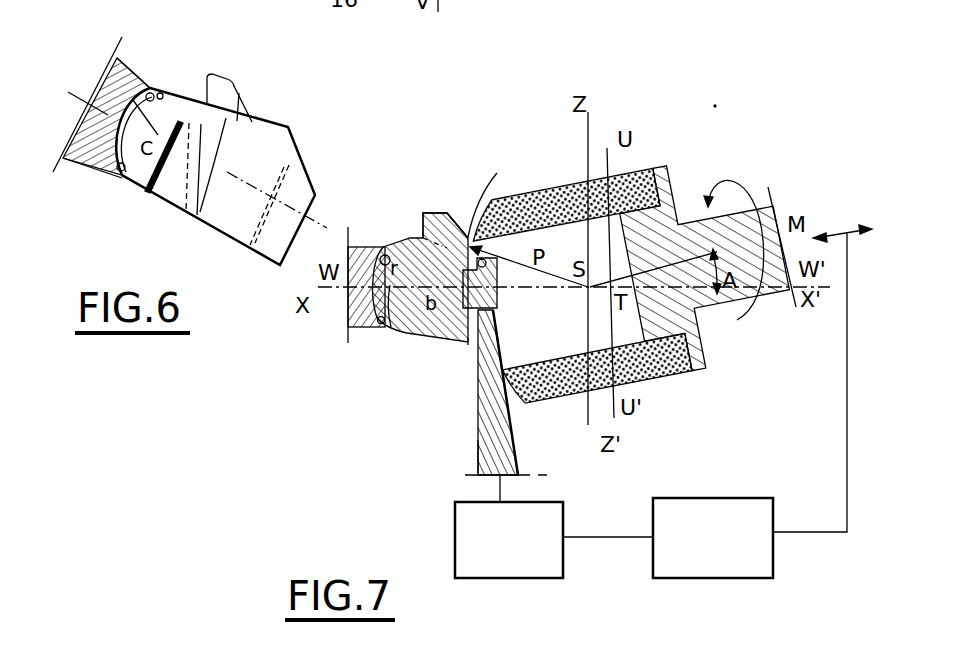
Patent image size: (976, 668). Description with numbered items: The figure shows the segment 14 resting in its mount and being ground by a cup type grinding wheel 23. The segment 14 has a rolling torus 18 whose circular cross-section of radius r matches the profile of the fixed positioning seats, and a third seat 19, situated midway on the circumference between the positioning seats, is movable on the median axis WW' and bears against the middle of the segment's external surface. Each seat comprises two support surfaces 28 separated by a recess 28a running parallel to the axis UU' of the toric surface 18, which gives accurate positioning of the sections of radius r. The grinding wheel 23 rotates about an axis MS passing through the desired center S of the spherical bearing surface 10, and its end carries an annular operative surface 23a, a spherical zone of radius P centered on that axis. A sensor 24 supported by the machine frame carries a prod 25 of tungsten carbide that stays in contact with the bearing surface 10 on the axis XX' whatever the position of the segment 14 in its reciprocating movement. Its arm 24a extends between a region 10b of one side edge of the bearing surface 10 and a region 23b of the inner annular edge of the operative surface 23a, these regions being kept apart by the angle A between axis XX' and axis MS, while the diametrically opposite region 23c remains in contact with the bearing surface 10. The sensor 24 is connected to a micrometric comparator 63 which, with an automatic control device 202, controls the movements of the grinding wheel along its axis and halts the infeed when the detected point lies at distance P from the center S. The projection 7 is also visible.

In FIG. 6, the projection 7 is at (240, 97).
In FIG. 7, the projection 7 is at (427, 213).
In FIG. 6, the spherical bearing surface 10 is at (257, 145).
In FIG. 7, the spherical bearing surface 10 is at (492, 320).
In FIG. 7, the region of side edge of bearing surface 10b is at (468, 340).
In FIG. 6, the segment 14 is at (222, 250).
In FIG. 7, the segment 14 is at (440, 323).
In FIG. 6, the rolling torus 18 is at (118, 93).
In FIG. 7, the rolling torus 18 is at (403, 340).
In FIG. 7, the third seat 19 is at (386, 340).
In FIG. 7, the cup type grinding wheel 23 is at (630, 292).
In FIG. 7, the annular operative surface 23a is at (540, 434).
In FIG. 7, the region of inner annular edge 23b is at (597, 369).
In FIG. 7, the region diametrically opposite region 23b 23c is at (560, 188).
In FIG. 7, the sensor 24 is at (476, 425).
In FIG. 7, the arm 24a is at (488, 445).
In FIG. 7, the prod 25 is at (436, 213).
In FIG. 6, the support surfaces 28 is at (150, 90).
In FIG. 7, the support surfaces 28 is at (386, 254).
In FIG. 6, the recess 28a is at (163, 97).
In FIG. 7, the micrometric comparator 63 is at (485, 578).
In FIG. 7, the automatic control device 202 is at (700, 578).